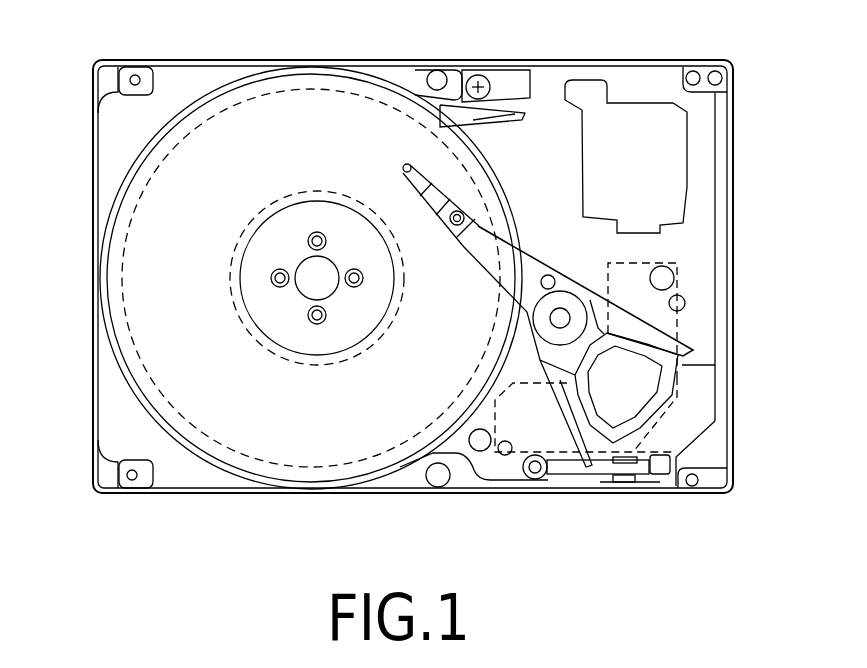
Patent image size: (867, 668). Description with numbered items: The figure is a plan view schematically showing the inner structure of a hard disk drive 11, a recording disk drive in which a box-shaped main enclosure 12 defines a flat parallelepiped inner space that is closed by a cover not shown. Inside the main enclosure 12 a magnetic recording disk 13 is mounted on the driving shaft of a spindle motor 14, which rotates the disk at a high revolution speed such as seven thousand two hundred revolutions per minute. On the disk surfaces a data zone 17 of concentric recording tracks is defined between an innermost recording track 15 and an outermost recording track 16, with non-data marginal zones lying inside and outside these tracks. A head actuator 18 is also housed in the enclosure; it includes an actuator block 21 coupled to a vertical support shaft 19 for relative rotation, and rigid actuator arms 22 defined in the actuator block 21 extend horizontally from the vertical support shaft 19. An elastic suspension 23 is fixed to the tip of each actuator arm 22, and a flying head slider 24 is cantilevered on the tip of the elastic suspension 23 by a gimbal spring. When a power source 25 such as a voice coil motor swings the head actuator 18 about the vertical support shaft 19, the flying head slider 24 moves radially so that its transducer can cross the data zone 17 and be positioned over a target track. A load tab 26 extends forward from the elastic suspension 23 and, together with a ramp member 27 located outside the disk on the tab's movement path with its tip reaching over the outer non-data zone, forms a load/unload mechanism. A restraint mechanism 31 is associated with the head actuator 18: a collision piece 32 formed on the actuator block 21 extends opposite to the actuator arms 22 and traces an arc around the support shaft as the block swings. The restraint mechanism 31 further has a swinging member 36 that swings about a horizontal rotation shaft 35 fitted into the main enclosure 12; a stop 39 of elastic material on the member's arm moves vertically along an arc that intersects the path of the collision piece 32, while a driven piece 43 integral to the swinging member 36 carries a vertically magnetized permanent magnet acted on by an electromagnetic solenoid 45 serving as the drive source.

The hard disk drive 11 is at (230, 495).
The main enclosure 12 is at (727, 437).
The magnetic recording disk 13 is at (130, 362).
The spindle motor 14 is at (306, 293).
The innermost recording track 15 is at (403, 289).
The outermost recording track 16 is at (124, 288).
The data zone 17 is at (375, 402).
The head actuator 18 is at (488, 295).
The vertical support shaft 19 is at (570, 298).
The actuator block 21 is at (548, 274).
The actuator arm 22 is at (497, 228).
The elastic suspension 23 is at (452, 223).
The flying head slider 24 is at (404, 170).
The power source 25 is at (680, 373).
The load tab 26 is at (403, 164).
The ramp member 27 is at (462, 68).
The restraint mechanism 31 is at (505, 478).
The collision piece 32 is at (573, 458).
The rotation shaft 35 is at (630, 484).
The swinging member 36 is at (580, 475).
The stop 39 is at (534, 480).
The driven piece 43 is at (654, 487).
The electromagnetic solenoid 45 is at (664, 476).